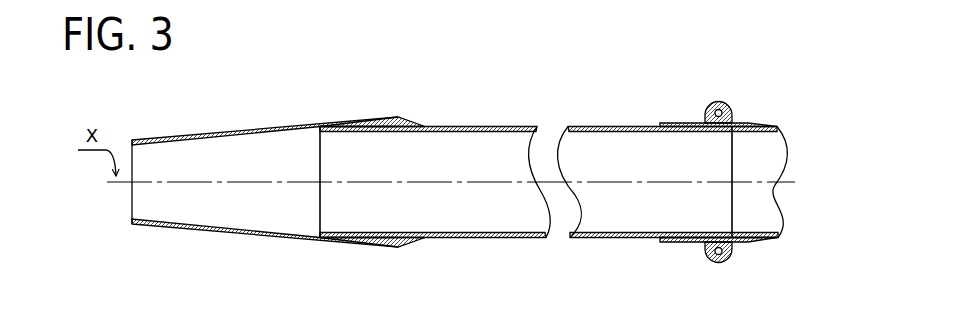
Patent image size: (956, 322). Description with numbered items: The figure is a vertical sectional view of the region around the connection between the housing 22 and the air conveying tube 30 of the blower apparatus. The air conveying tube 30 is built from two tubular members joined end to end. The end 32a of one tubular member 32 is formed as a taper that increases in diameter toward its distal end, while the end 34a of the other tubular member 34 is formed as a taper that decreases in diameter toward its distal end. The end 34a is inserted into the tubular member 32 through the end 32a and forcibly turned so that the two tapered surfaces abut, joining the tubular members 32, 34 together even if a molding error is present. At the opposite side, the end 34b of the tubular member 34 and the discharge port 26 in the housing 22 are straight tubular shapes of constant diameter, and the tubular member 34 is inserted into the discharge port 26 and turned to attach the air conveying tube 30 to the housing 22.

The air conveying tube 30 is at (182, 99).
The tubular member 32 is at (212, 230).
The end of tubular member 32a is at (337, 242).
The tubular member 34 is at (493, 238).
The end of tubular member 34a is at (384, 240).
The end of air conveying tube 34b is at (688, 240).
The discharge port 26 is at (670, 123).
The housing 22 is at (741, 98).